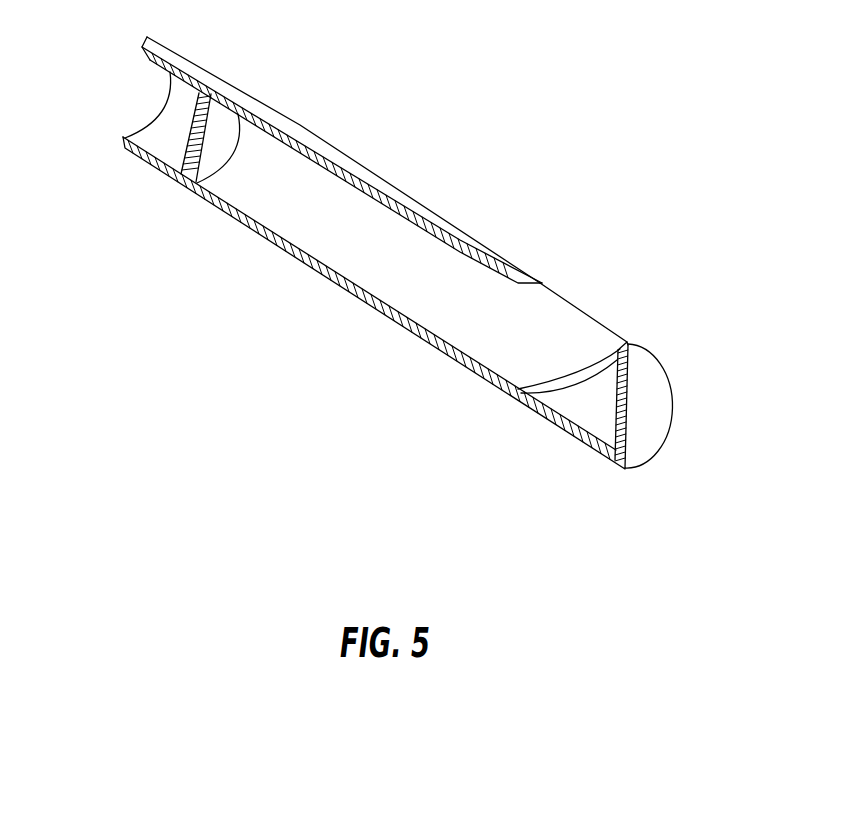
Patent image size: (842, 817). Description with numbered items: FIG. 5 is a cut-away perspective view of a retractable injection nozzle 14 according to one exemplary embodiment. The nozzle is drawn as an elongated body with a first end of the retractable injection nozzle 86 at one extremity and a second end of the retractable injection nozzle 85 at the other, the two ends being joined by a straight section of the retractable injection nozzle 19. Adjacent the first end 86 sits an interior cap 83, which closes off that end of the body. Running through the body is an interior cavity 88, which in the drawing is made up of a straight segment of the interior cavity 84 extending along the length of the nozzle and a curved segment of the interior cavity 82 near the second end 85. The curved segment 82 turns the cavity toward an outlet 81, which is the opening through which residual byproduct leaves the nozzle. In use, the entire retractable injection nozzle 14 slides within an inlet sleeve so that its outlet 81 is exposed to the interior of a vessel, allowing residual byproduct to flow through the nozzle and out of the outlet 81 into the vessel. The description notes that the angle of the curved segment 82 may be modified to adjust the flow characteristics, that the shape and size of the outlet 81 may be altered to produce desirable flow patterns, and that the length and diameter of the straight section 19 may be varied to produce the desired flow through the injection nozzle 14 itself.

The retractable injection nozzle 14 is at (362, 166).
The straight section of the retractable injection nozzle 19 is at (302, 125).
The outlet 81 is at (565, 323).
The curved segment of the interior cavity 82 is at (522, 365).
The interior cap 83 is at (217, 165).
The straight segment of the interior cavity 84 is at (385, 283).
The second end of the retractable injection nozzle 85 is at (638, 428).
The first end of the retractable injection nozzle 86 is at (160, 110).
The interior cavity 88 is at (318, 213).